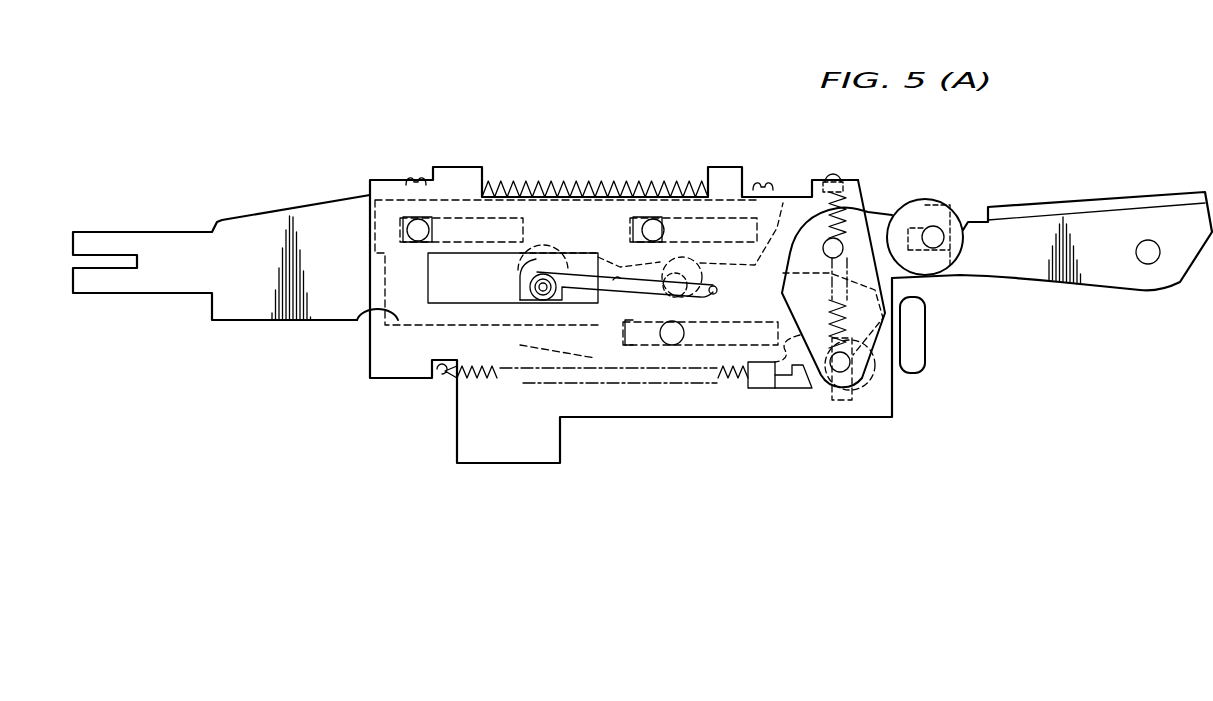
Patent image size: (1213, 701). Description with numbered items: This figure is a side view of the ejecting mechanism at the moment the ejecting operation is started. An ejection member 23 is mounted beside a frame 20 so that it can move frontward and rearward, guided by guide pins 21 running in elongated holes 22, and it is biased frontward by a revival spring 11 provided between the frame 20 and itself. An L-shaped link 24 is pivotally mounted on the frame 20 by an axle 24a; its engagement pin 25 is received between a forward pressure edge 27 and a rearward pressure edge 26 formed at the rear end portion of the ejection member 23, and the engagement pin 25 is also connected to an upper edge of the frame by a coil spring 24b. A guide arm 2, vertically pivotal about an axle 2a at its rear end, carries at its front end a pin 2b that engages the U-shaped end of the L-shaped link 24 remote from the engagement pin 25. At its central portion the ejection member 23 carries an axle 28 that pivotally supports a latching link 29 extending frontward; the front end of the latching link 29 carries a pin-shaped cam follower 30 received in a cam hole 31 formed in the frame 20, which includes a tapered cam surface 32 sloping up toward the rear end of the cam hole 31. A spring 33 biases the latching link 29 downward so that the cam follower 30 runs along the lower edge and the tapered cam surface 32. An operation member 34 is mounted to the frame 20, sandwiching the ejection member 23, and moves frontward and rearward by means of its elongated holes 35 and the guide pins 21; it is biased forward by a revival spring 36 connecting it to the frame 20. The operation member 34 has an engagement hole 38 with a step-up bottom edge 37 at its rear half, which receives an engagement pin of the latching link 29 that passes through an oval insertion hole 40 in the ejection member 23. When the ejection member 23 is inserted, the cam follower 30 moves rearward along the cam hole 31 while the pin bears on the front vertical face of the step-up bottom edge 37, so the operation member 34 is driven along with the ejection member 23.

The guide arm 2 is at (1093, 222).
The axle 2a is at (1147, 262).
The pin 2b is at (935, 235).
The revival spring 11 is at (522, 375).
The frame 20 is at (708, 402).
The guide pins 21 is at (418, 225).
The elongated holes 22 is at (440, 222).
The ejection member 23 is at (185, 243).
The L-shaped link 24 is at (877, 305).
The axle 24a is at (845, 248).
The coil spring 24b is at (840, 228).
The engagement pin 25 is at (843, 365).
The rearward pressure edge 26 is at (828, 348).
The forward pressure edge 27 is at (913, 348).
The axle 28 is at (718, 283).
The latching link 29 is at (590, 303).
The cam follower 30 is at (553, 290).
The cam hole 31 is at (442, 300).
The tapered cam surface 32 is at (557, 312).
The spring 33 is at (643, 287).
The operation member 34 is at (397, 310).
The elongated holes 35 is at (397, 220).
The revival spring 36 is at (515, 183).
The step-up bottom edge 37 is at (615, 280).
The engagement hole 38 is at (440, 272).
The oval insertion hole 40 is at (547, 278).